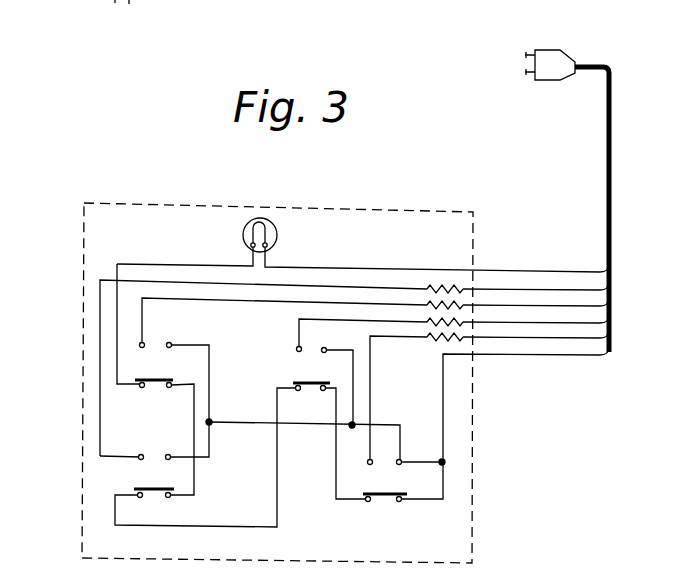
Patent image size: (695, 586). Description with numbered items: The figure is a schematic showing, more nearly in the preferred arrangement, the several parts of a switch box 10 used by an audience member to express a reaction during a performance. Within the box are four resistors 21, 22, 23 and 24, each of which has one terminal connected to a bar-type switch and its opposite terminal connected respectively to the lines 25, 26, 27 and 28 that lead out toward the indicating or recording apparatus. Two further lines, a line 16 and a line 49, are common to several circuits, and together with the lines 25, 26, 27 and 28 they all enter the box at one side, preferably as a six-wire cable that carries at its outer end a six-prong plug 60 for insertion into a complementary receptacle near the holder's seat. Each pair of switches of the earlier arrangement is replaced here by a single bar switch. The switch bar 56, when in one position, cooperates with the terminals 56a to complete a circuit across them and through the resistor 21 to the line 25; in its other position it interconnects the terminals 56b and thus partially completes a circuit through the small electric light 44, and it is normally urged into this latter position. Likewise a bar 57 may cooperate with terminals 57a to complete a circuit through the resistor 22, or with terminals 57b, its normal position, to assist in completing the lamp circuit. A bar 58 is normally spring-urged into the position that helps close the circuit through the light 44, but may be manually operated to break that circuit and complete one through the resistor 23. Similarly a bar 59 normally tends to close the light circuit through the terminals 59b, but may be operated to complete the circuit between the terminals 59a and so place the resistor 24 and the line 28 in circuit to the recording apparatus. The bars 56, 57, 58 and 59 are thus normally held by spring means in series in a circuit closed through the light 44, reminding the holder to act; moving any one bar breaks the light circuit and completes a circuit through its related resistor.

The switch box 10 is at (79, 230).
The line 16 is at (443, 418).
The resistor 21 is at (447, 285).
The resistor 22 is at (430, 303).
The resistor 23 is at (428, 323).
The resistor 24 is at (438, 340).
The line 25 is at (515, 289).
The line 26 is at (556, 305).
The line 27 is at (535, 324).
The line 28 is at (562, 340).
The electric light 44 is at (261, 219).
The line 49 is at (487, 273).
The switch bar 56 is at (147, 487).
The terminals 56a is at (169, 449).
The terminals 56b is at (145, 497).
The bar 57 is at (162, 380).
The terminals 57a is at (177, 334).
The terminals 57b is at (168, 393).
The bar 58 is at (310, 380).
The bar 59 is at (380, 493).
The terminals 59a is at (368, 461).
The terminals 59b is at (394, 511).
The six-prong plug 60 is at (556, 50).